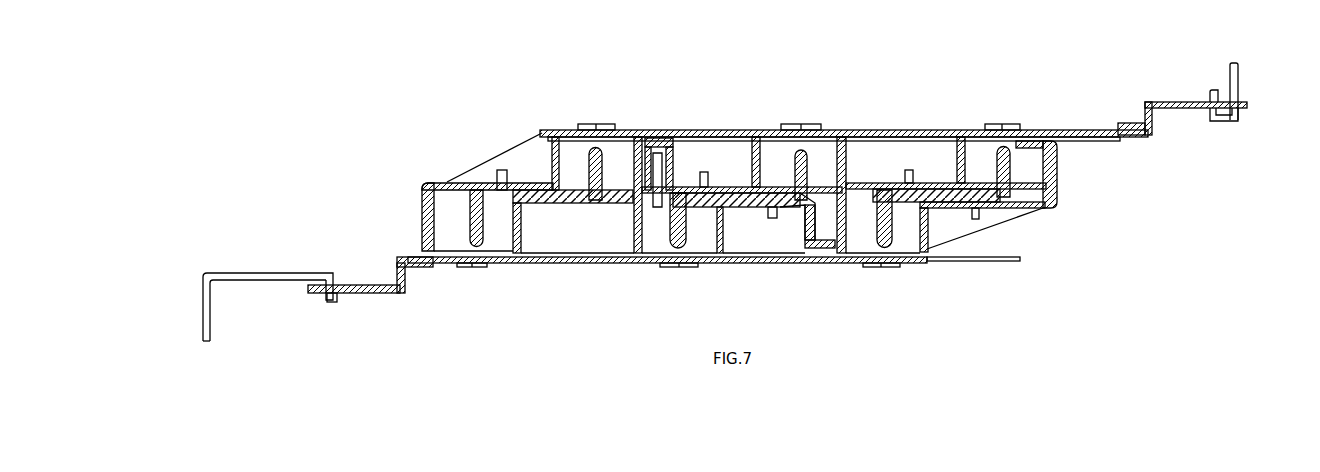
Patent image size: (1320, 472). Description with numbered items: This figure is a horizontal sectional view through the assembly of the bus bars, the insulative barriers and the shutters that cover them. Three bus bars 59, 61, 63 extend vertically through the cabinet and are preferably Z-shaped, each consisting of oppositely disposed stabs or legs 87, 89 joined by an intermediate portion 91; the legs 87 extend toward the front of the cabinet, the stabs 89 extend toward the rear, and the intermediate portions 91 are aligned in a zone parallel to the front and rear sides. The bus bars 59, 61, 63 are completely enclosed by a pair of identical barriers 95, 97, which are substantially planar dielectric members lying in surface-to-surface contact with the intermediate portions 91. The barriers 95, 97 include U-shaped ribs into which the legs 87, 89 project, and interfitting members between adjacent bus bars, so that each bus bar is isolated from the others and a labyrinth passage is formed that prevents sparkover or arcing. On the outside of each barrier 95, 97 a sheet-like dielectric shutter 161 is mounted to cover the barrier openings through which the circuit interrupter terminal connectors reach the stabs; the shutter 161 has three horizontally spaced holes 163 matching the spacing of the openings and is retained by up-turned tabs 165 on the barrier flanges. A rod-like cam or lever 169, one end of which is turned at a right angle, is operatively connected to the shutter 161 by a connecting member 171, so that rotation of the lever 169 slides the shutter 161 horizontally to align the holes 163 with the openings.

The bus bar 59 is at (521, 212).
The bus bar 61 is at (760, 210).
The bus bar 63 is at (998, 200).
The stab 87 is at (476, 230).
The stab 89 is at (805, 160).
The intermediate portion 91 is at (545, 195).
The barrier 95 is at (455, 185).
The barrier 97 is at (425, 231).
The shutter 161 is at (940, 130).
The hole 163 is at (838, 130).
The up-turned tab 165 is at (470, 268).
The cam or lever 169 is at (273, 273).
The connecting member 171 is at (368, 294).